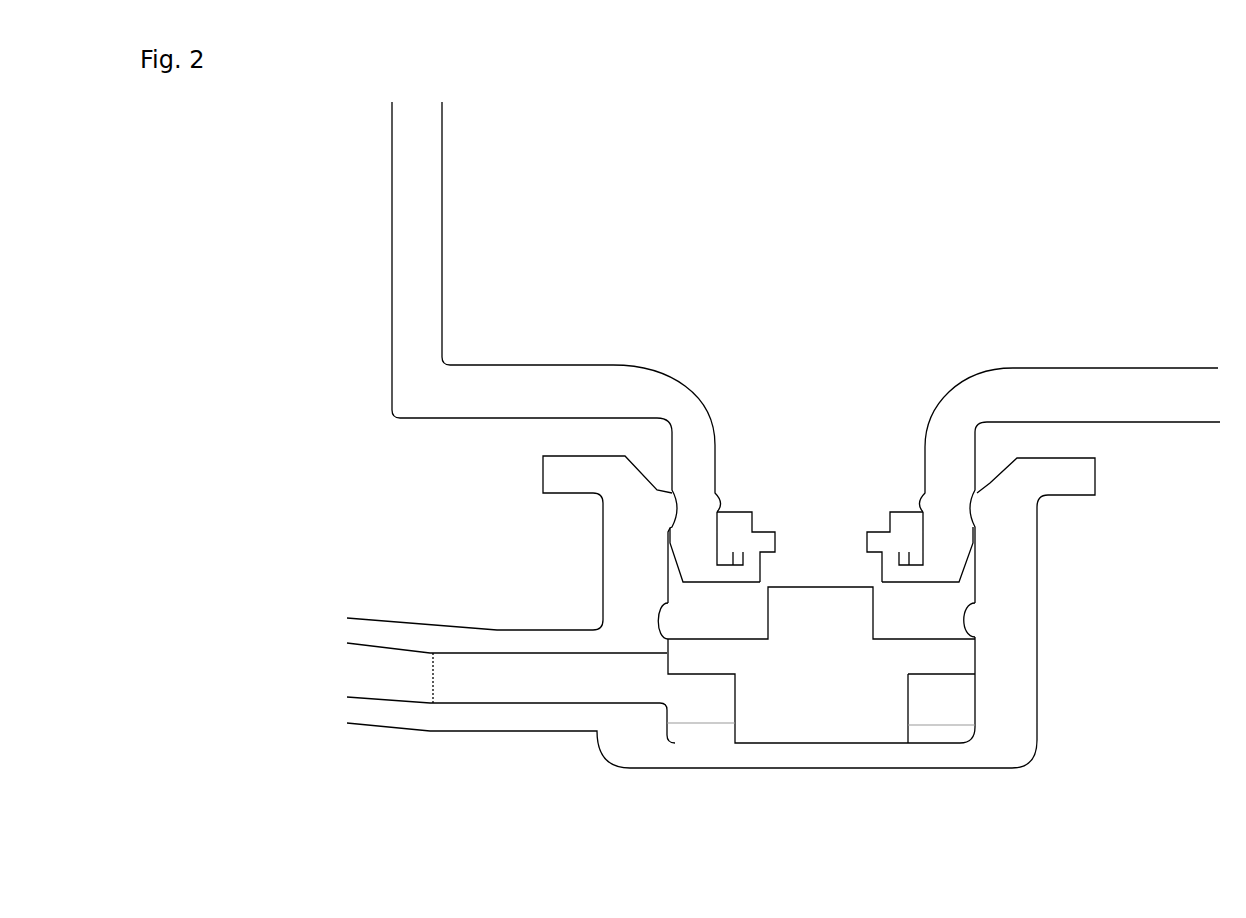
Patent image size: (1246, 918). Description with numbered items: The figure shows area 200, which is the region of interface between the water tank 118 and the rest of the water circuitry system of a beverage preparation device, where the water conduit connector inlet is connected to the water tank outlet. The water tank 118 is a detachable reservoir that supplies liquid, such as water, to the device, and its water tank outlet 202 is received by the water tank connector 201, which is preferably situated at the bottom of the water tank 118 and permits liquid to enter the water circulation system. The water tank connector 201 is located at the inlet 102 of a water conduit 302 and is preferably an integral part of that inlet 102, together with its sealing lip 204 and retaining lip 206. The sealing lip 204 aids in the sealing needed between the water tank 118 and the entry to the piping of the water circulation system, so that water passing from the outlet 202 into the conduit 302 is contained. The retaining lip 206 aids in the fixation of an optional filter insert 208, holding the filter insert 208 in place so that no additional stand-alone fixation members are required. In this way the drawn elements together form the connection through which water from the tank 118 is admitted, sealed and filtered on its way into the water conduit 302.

The area of interface 200 is at (640, 35).
The water tank 118 is at (403, 281).
The water tank connector sealing lip 204 is at (654, 507).
The retaining lip 206 is at (664, 618).
The filter insert 208 is at (694, 660).
The inlet of the water conduit 102 is at (953, 698).
The water tank connector 201 is at (1038, 638).
The water tank outlet 202 is at (952, 556).
The water conduit 302 is at (528, 732).